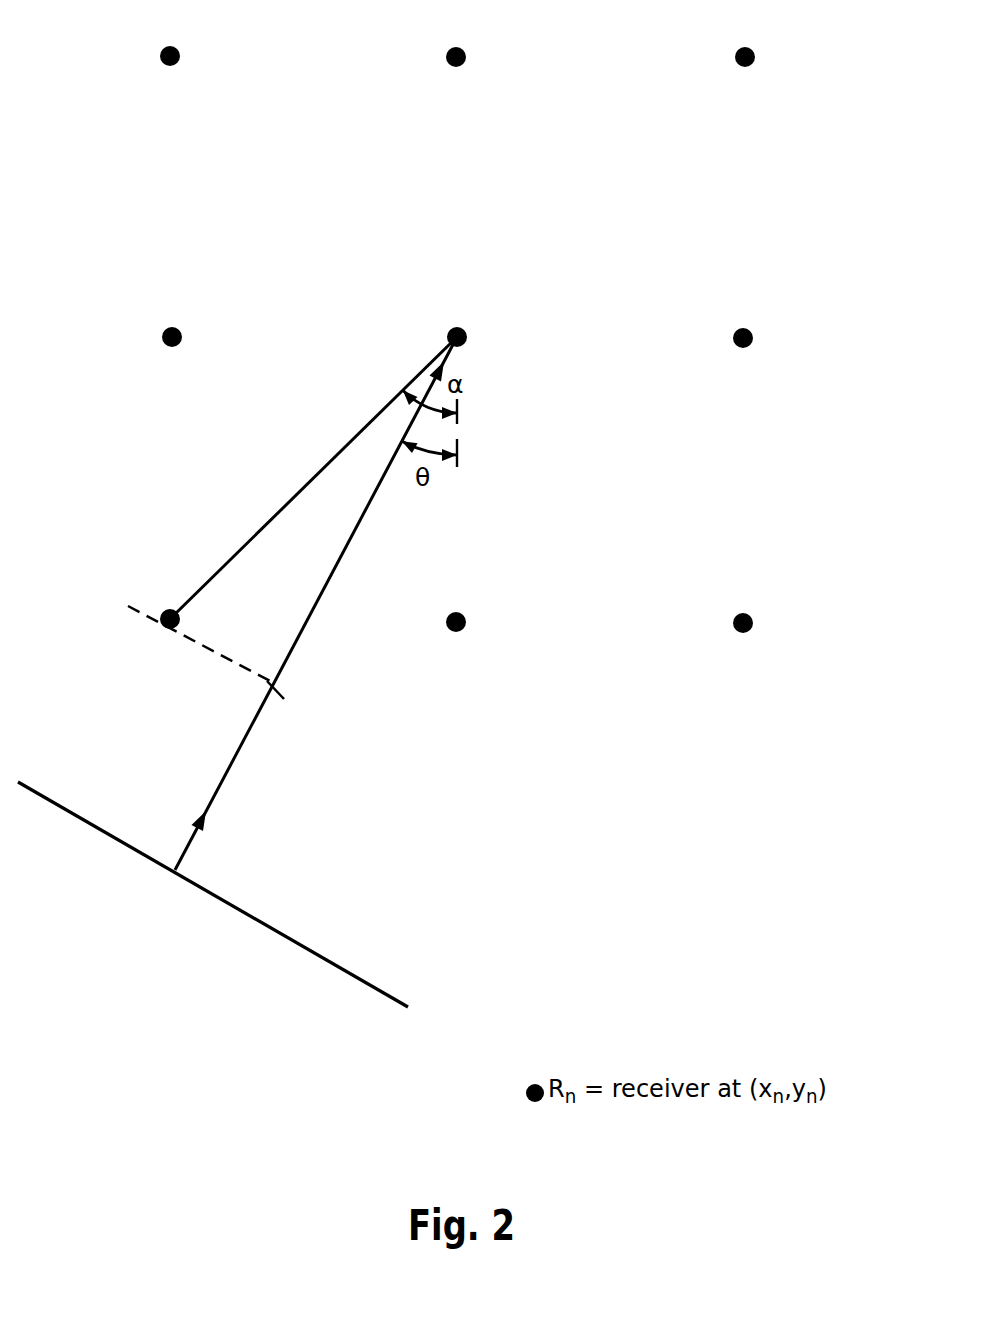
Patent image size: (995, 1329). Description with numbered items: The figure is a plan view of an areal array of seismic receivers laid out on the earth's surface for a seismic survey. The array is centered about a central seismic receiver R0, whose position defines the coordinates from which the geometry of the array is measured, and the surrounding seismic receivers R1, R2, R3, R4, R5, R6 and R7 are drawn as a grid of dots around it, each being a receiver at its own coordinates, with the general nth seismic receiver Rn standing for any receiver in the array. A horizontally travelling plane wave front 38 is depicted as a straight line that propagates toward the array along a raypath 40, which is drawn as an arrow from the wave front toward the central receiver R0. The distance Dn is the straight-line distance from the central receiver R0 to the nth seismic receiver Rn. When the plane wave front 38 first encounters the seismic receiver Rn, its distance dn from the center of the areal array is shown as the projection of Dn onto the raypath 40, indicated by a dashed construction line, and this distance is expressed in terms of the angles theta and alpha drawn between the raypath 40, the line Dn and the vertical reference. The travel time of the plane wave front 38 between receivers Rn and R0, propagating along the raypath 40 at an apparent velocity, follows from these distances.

The plane wave front 38 is at (330, 960).
The raypath 40 is at (213, 790).
The central seismic receiver R0 is at (455, 326).
The seismic receiver R1 is at (168, 44).
The seismic receiver R2 is at (452, 45).
The seismic receiver R3 is at (740, 45).
The seismic receiver R4 is at (753, 325).
The seismic receiver R5 is at (166, 323).
The seismic receiver R6 is at (737, 609).
The seismic receiver R7 is at (464, 608).
The nth seismic receiver Rn is at (165, 609).
The distance from R0 to Rn Dn is at (272, 517).
The distance along raypath to wave front dn is at (276, 667).